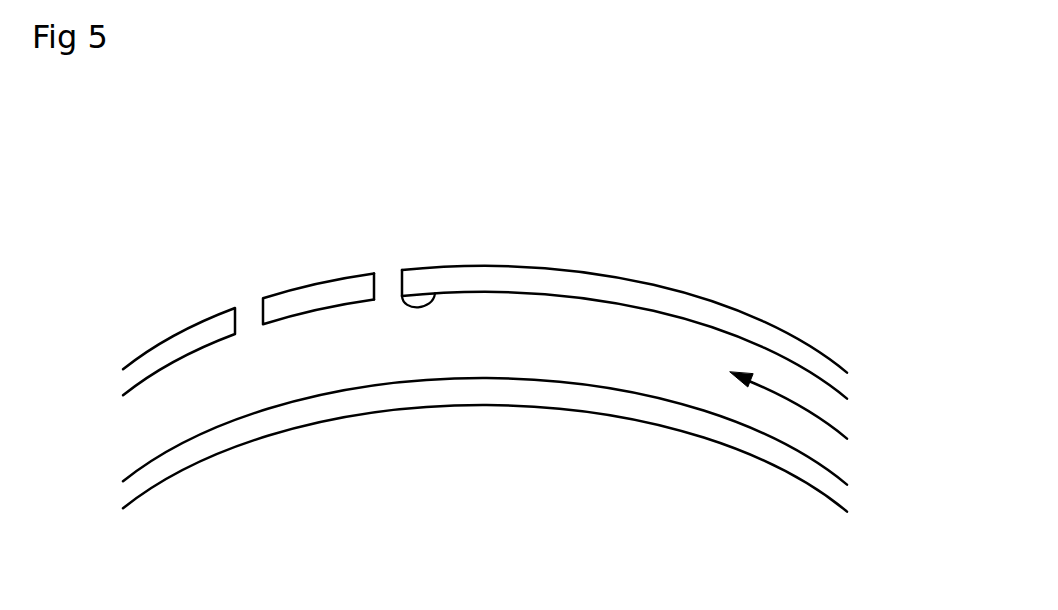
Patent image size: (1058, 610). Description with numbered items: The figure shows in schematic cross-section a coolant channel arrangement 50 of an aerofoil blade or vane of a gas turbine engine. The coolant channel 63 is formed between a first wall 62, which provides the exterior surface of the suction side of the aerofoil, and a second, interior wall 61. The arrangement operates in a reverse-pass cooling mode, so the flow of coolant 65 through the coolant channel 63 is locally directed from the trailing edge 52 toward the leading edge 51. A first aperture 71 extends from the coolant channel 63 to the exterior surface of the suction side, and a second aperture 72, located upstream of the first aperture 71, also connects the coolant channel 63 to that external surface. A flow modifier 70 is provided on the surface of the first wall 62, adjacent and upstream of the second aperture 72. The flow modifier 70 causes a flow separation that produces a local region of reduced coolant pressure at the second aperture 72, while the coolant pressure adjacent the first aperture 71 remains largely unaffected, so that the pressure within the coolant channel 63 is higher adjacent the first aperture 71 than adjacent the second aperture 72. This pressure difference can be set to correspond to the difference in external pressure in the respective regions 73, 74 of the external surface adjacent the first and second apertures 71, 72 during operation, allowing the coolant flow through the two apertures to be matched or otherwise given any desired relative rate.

The band assembly 50 is at (714, 136).
The leading edge 51 is at (103, 418).
The trailing edge 52 is at (867, 418).
The second wall 61 is at (570, 410).
The first wall 62 is at (745, 313).
The coolant channel 63 is at (680, 370).
The flow of coolant 65 is at (820, 419).
The flow modifier 70 is at (423, 308).
The first aperture 71 is at (253, 315).
The second aperture 72 is at (392, 287).
The region of the external surface 73 is at (273, 297).
The region of the external surface 74 is at (368, 272).